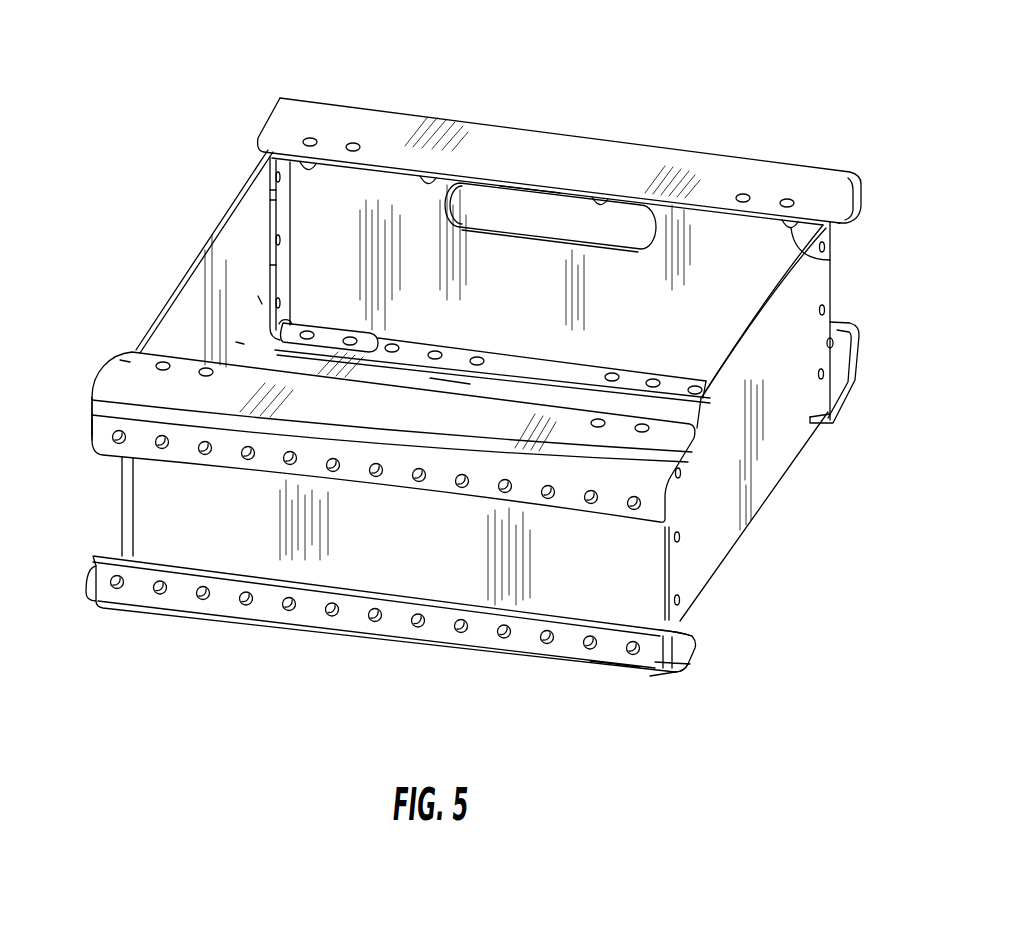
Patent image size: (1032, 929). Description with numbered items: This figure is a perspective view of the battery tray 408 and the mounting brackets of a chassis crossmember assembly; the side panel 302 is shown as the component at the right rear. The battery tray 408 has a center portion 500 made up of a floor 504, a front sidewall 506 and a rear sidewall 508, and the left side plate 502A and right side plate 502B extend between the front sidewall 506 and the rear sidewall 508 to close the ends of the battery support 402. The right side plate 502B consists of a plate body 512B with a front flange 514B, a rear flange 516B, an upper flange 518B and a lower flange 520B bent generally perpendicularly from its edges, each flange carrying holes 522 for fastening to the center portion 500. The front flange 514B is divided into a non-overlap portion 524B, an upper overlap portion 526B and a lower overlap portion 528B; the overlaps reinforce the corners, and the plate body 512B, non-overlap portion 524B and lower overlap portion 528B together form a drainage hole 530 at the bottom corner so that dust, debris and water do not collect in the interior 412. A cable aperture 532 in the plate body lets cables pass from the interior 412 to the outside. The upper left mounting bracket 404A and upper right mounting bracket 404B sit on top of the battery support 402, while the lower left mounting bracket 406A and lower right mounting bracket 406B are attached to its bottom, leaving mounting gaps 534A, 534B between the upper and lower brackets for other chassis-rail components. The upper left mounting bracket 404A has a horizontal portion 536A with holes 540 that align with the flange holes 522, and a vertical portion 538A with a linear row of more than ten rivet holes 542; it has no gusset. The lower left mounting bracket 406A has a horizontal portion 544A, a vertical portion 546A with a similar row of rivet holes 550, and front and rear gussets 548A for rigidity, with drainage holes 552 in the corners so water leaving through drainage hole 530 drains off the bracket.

The side panel 302 is at (750, 482).
The battery support 402 is at (258, 300).
The upper left mounting bracket 404A is at (103, 372).
The upper right mounting bracket 404B is at (866, 190).
The lower left mounting bracket 406A is at (683, 659).
The lower right mounting bracket 406B is at (852, 359).
The battery tray 408 is at (267, 173).
The interior 412 is at (678, 222).
The center portion 500 is at (251, 187).
The left side plate 502A is at (137, 500).
The right side plate 502B is at (357, 197).
The floor 504 is at (440, 380).
The front sidewall 506 is at (240, 345).
The rear sidewall 508 is at (768, 412).
The plate body 512B is at (712, 243).
The front flange 514B is at (275, 195).
The rear flange 516B is at (833, 258).
The upper flange 518B is at (425, 368).
The lower flange 520B is at (540, 367).
The holes 522 is at (694, 381).
The non-overlap portion 524B is at (270, 263).
The upper overlap portion 526B is at (328, 338).
The lower overlap portion 528B is at (353, 140).
The drainage hole 530 is at (267, 316).
The cable aperture 532 is at (528, 190).
The mounting gap 534A is at (82, 478).
The mounting gap 534B is at (850, 294).
The horizontal portion 536A is at (125, 363).
The vertical portion 538A is at (92, 427).
The holes 540 is at (201, 362).
The rivet holes 542 is at (289, 470).
The horizontal portion 544A is at (677, 667).
The vertical portion 546A is at (610, 641).
The gussets 548A is at (683, 624).
The rivet holes 550 is at (500, 646).
The drainage holes 552 is at (96, 608).